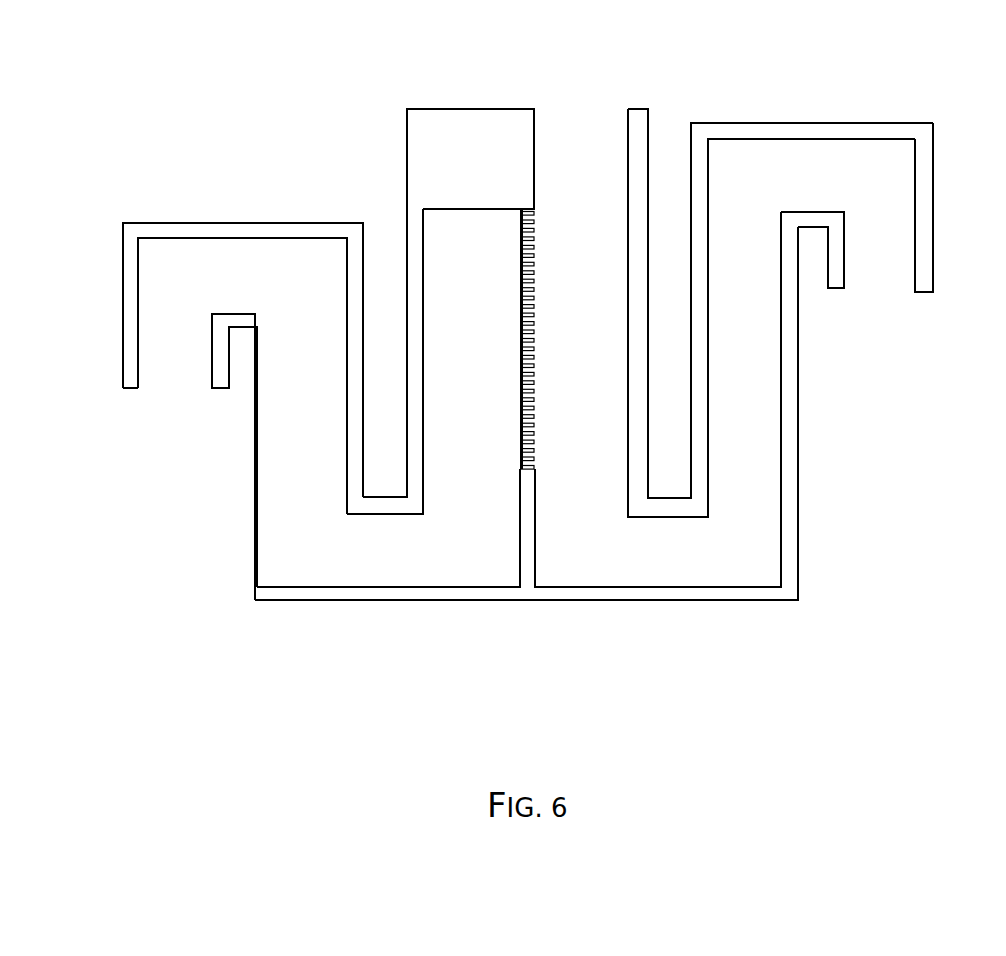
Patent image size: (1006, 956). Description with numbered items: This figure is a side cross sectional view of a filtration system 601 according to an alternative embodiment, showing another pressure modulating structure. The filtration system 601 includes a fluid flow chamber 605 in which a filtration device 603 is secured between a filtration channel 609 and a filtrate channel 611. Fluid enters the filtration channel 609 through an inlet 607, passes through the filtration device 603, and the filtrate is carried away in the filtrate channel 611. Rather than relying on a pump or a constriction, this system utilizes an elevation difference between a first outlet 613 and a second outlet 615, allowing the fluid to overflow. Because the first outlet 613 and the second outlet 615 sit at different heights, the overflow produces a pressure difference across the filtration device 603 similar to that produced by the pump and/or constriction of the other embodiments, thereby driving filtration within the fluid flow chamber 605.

The filtration system 601 is at (535, 362).
The filtration device 603 is at (513, 326).
The fluid flow chamber 605 is at (407, 184).
The inlet 607 is at (575, 105).
The filtration channel 609 is at (583, 522).
The filtrate channel 611 is at (463, 521).
The first outlet 613 is at (167, 398).
The second outlet 615 is at (900, 308).